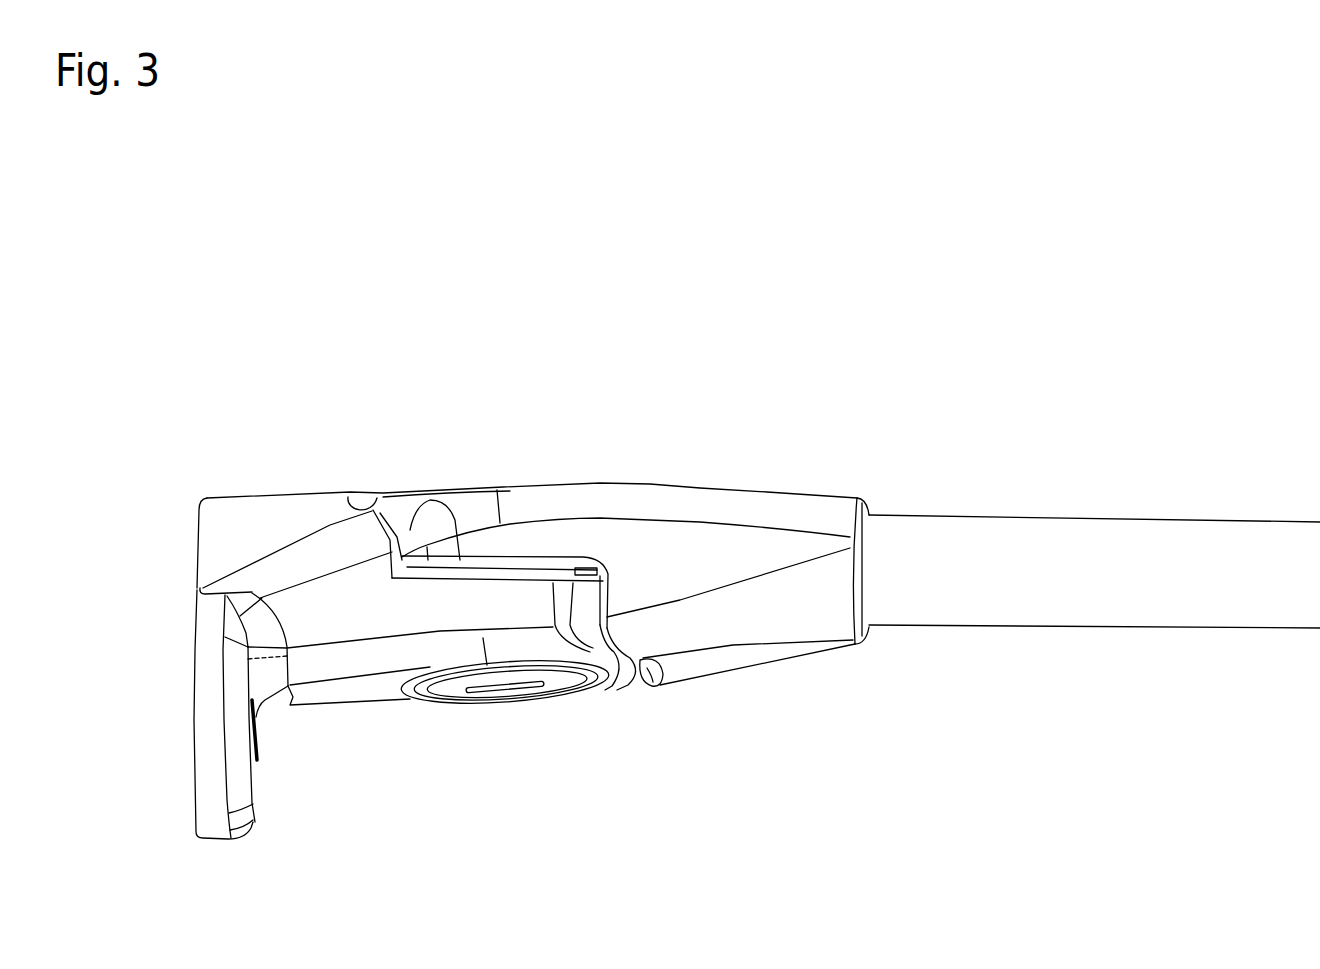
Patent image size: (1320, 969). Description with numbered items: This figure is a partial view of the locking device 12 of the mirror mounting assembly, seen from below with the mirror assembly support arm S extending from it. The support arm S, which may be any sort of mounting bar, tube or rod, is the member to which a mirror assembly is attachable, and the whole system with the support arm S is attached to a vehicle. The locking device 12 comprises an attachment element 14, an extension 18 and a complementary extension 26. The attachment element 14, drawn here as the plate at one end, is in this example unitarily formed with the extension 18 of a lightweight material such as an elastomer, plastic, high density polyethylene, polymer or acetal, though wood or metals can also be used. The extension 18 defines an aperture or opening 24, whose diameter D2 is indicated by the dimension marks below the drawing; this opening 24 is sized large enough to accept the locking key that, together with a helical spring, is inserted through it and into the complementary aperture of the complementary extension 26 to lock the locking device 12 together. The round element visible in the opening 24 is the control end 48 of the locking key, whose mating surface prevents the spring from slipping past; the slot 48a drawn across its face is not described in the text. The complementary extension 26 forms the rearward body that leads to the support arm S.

The locking device 12 is at (633, 422).
The attachment element 14 is at (210, 803).
The extension 18 is at (335, 629).
The aperture or opening 24 is at (414, 698).
The complementary extension 26 is at (736, 572).
The control end 48 is at (567, 681).
The slot in weight member 48a is at (483, 689).
The mirror assembly support arm S is at (1020, 601).
The diameter of aperture D2 is at (413, 727).